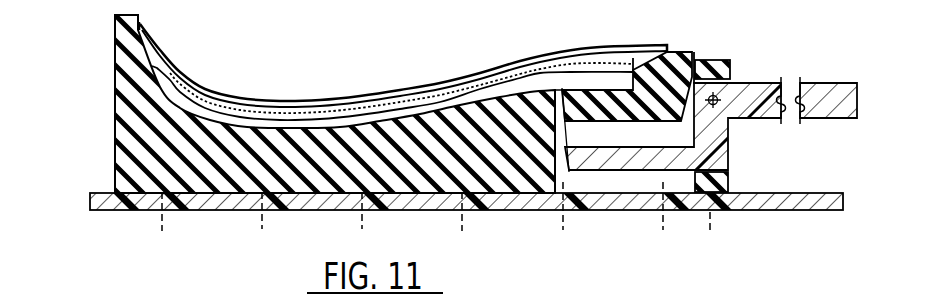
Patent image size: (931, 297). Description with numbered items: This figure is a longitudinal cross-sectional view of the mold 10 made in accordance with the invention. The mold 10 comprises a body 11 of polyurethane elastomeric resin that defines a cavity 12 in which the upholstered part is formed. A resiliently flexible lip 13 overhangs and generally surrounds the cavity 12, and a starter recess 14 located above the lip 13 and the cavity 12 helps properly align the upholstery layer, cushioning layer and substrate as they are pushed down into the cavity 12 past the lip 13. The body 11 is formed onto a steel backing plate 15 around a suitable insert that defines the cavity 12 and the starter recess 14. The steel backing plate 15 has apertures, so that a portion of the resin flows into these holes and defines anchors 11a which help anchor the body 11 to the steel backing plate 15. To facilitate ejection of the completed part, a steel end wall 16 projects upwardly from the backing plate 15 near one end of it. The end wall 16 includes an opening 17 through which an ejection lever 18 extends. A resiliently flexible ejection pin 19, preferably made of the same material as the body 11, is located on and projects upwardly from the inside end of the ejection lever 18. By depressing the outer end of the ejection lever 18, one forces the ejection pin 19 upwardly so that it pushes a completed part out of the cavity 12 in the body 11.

The mold 10 is at (726, 53).
The body 11 is at (132, 108).
The anchors 11a is at (408, 148).
The cavity 12 is at (258, 122).
The resiliently flexible lip 13 is at (176, 74).
The starter recess 14 is at (307, 107).
The steel backing plate 15 is at (126, 201).
The steel end wall 16 is at (696, 58).
The opening 17 is at (731, 68).
The ejection lever 18 is at (719, 137).
The ejection pin 19 is at (577, 92).